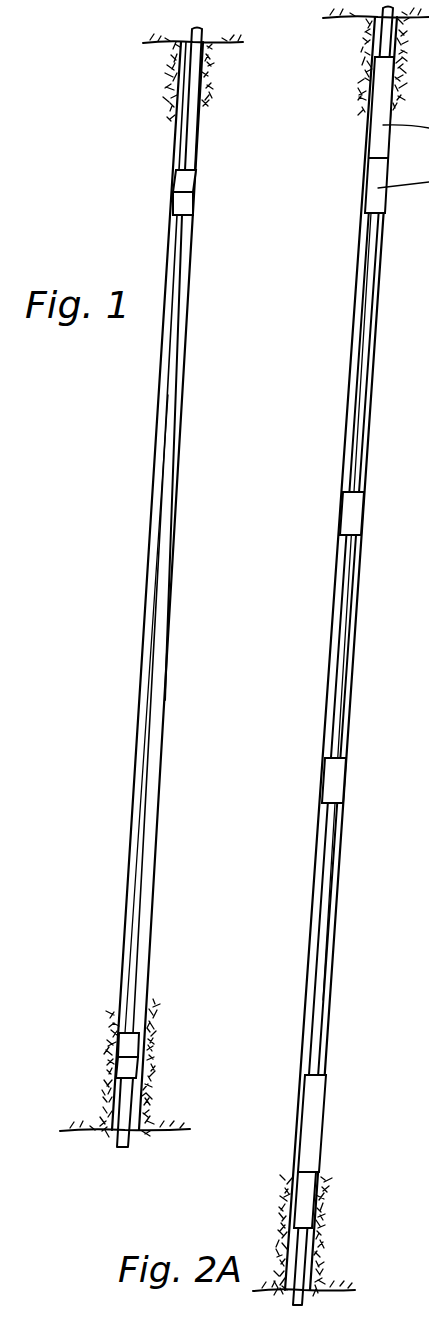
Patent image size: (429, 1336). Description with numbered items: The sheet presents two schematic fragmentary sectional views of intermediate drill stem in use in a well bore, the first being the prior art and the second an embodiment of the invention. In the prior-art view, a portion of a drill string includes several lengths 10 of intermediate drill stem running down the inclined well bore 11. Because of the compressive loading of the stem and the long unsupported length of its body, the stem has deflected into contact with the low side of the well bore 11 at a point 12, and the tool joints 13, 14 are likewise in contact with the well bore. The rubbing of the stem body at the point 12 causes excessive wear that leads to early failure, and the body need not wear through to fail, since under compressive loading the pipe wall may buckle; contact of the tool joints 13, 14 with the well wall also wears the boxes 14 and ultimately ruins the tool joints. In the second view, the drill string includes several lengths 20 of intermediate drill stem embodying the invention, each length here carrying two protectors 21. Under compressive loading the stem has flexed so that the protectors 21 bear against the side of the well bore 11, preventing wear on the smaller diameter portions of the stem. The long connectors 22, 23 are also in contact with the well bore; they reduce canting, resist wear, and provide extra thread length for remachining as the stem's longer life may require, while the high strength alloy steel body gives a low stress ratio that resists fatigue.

In FIG. 1, the lengths of intermediate drill stem 10 is at (186, 133).
In FIG. 1, the well bore 11 is at (155, 448).
In FIG. 2A, the well bore 11 is at (345, 440).
In FIG. 1, the point of contact 12 is at (170, 620).
In FIG. 1, the tool joint 13 is at (186, 181).
In FIG. 1, the tool joint box 14 is at (198, 205).
In FIG. 2A, the lengths of intermediate drill stem 20 is at (385, 43).
In FIG. 2A, the protector 21 is at (356, 517).
In FIG. 2A, the connector 22 is at (310, 1190).
In FIG. 2A, the connector 23 is at (310, 1100).